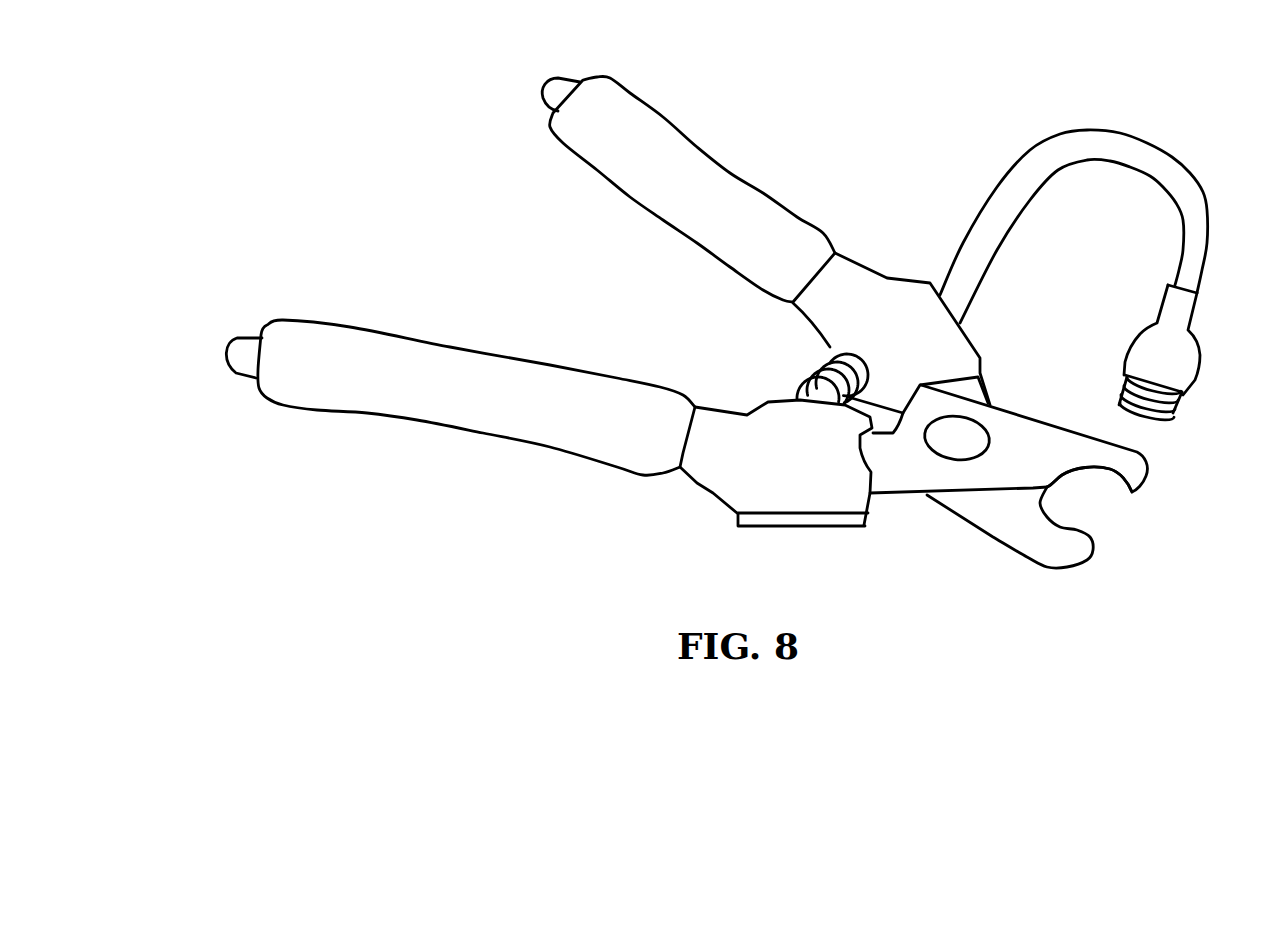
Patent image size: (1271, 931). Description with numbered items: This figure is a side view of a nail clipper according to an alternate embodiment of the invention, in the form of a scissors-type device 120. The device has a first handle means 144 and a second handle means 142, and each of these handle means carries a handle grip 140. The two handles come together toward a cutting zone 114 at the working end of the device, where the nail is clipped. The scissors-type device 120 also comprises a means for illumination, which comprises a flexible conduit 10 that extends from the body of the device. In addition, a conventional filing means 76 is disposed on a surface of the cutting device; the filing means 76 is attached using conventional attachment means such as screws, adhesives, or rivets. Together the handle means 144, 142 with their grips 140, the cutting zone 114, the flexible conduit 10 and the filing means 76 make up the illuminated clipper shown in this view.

The flexible conduit 10 is at (1142, 152).
The filing means 76 is at (787, 518).
The cutting zone 114 is at (1090, 505).
The scissors-type device 120 is at (546, 524).
The handle grip 140 is at (723, 197).
The second handle means 142 is at (243, 350).
The first handle means 144 is at (553, 92).